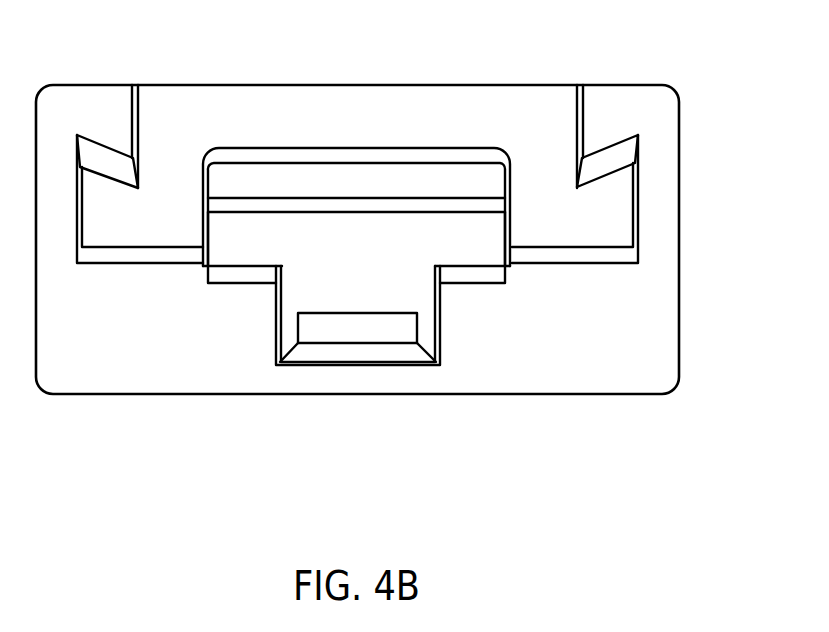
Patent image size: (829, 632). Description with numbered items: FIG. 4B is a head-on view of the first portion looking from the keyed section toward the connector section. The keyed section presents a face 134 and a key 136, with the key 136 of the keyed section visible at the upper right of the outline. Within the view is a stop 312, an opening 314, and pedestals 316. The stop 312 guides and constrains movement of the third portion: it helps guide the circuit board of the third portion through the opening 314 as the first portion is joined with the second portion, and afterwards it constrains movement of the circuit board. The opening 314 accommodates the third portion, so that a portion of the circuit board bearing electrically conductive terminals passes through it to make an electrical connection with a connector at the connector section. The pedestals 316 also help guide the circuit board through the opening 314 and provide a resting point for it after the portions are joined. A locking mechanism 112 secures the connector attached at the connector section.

The locking mechanism 112 is at (367, 327).
The face 134 is at (321, 119).
The key 136 is at (617, 160).
The stop 312 is at (437, 184).
The opening 314 is at (387, 236).
The pedestals 316 is at (250, 273).